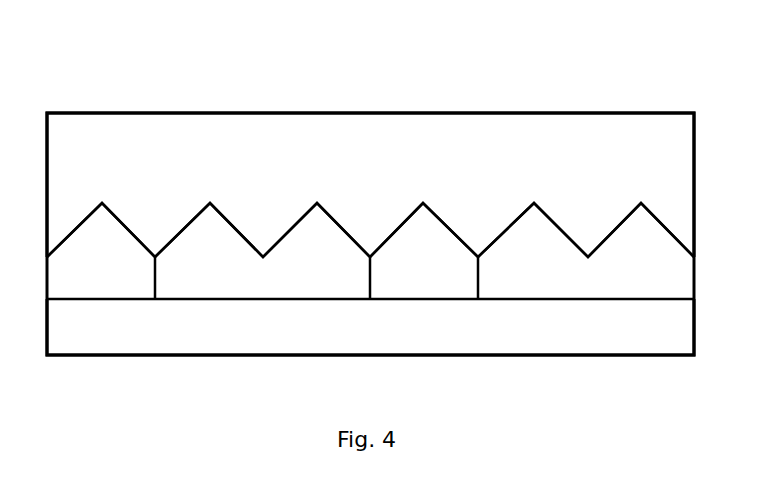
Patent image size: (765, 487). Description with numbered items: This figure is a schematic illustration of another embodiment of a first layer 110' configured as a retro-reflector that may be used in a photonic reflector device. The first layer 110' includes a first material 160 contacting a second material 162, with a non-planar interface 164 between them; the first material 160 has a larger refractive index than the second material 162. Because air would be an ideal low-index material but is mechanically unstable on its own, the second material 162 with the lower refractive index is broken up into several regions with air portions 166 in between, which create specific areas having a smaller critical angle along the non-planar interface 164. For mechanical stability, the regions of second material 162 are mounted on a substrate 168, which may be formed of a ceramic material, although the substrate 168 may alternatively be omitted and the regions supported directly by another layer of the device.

The first layer 110' is at (370, 191).
The first material 160 is at (627, 178).
The second material 162 is at (112, 278).
The non-planar interface 164 is at (231, 216).
The air portions 166 is at (280, 290).
The substrate 168 is at (366, 338).